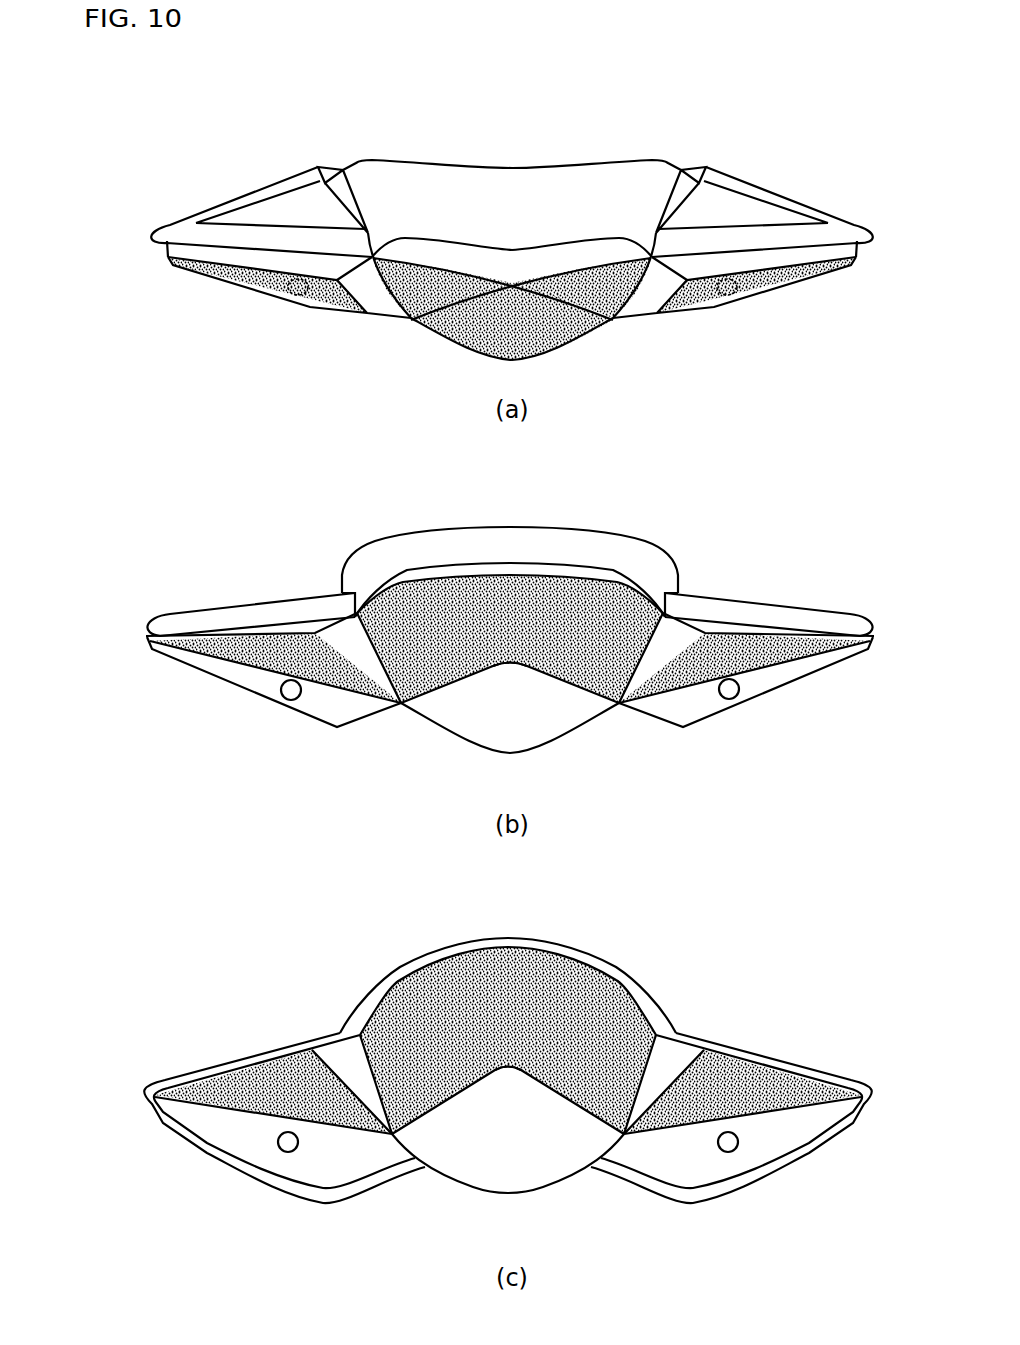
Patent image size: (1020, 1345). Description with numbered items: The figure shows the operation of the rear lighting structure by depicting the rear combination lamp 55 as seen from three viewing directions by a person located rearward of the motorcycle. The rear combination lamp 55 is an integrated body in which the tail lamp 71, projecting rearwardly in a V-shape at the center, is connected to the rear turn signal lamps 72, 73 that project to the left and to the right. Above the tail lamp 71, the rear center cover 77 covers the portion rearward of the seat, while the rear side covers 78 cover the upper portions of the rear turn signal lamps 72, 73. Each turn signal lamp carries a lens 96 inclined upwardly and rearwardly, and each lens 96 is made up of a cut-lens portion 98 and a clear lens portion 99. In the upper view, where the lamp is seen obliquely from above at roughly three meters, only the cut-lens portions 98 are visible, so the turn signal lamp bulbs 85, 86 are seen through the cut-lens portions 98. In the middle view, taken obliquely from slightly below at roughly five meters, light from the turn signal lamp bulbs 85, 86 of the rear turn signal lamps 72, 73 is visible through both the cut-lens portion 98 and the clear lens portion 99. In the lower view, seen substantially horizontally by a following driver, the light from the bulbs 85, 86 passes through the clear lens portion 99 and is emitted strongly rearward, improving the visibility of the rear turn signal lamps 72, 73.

The rear combination lamp 55 is at (211, 168).
The tail lamp 71 is at (556, 259).
The rear turn signal lamp 72 is at (195, 277).
The rear turn signal lamp 73 is at (831, 276).
The rear center cover 77 is at (483, 184).
The rear side cover 78 is at (273, 203).
The turn signal lamp bulb 85 is at (304, 292).
The turn signal lamp bulb 86 is at (722, 291).
The lens 96 is at (243, 280).
The cut-lens portion 98 is at (268, 283).
The clear lens portion 99 is at (341, 715).